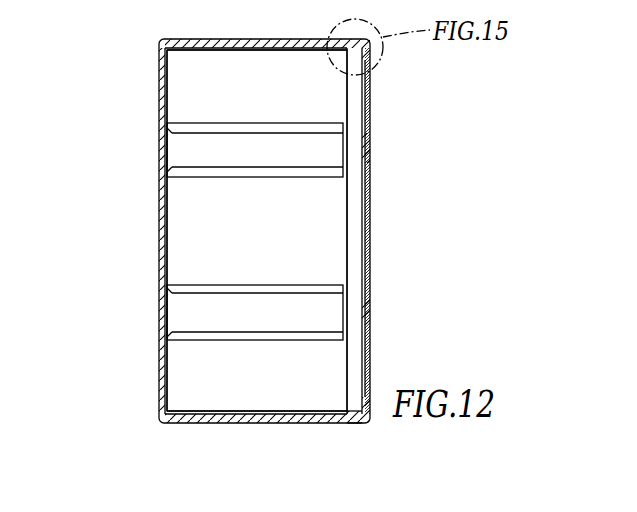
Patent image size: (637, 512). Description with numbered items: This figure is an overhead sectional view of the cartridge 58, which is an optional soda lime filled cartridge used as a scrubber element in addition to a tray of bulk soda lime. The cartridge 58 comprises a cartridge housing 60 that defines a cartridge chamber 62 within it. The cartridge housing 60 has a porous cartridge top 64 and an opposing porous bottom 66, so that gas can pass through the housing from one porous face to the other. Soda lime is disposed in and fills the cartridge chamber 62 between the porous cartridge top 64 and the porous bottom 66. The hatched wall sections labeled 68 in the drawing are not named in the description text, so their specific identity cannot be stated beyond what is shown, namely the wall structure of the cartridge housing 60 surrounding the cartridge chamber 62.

The cartridge 58 is at (134, 101).
The cartridge housing 60 is at (142, 174).
The cartridge chamber 62 is at (262, 225).
The porous cartridge top 64 is at (370, 207).
The porous bottom 66 is at (160, 318).
The insulated wall 68 is at (223, 39).